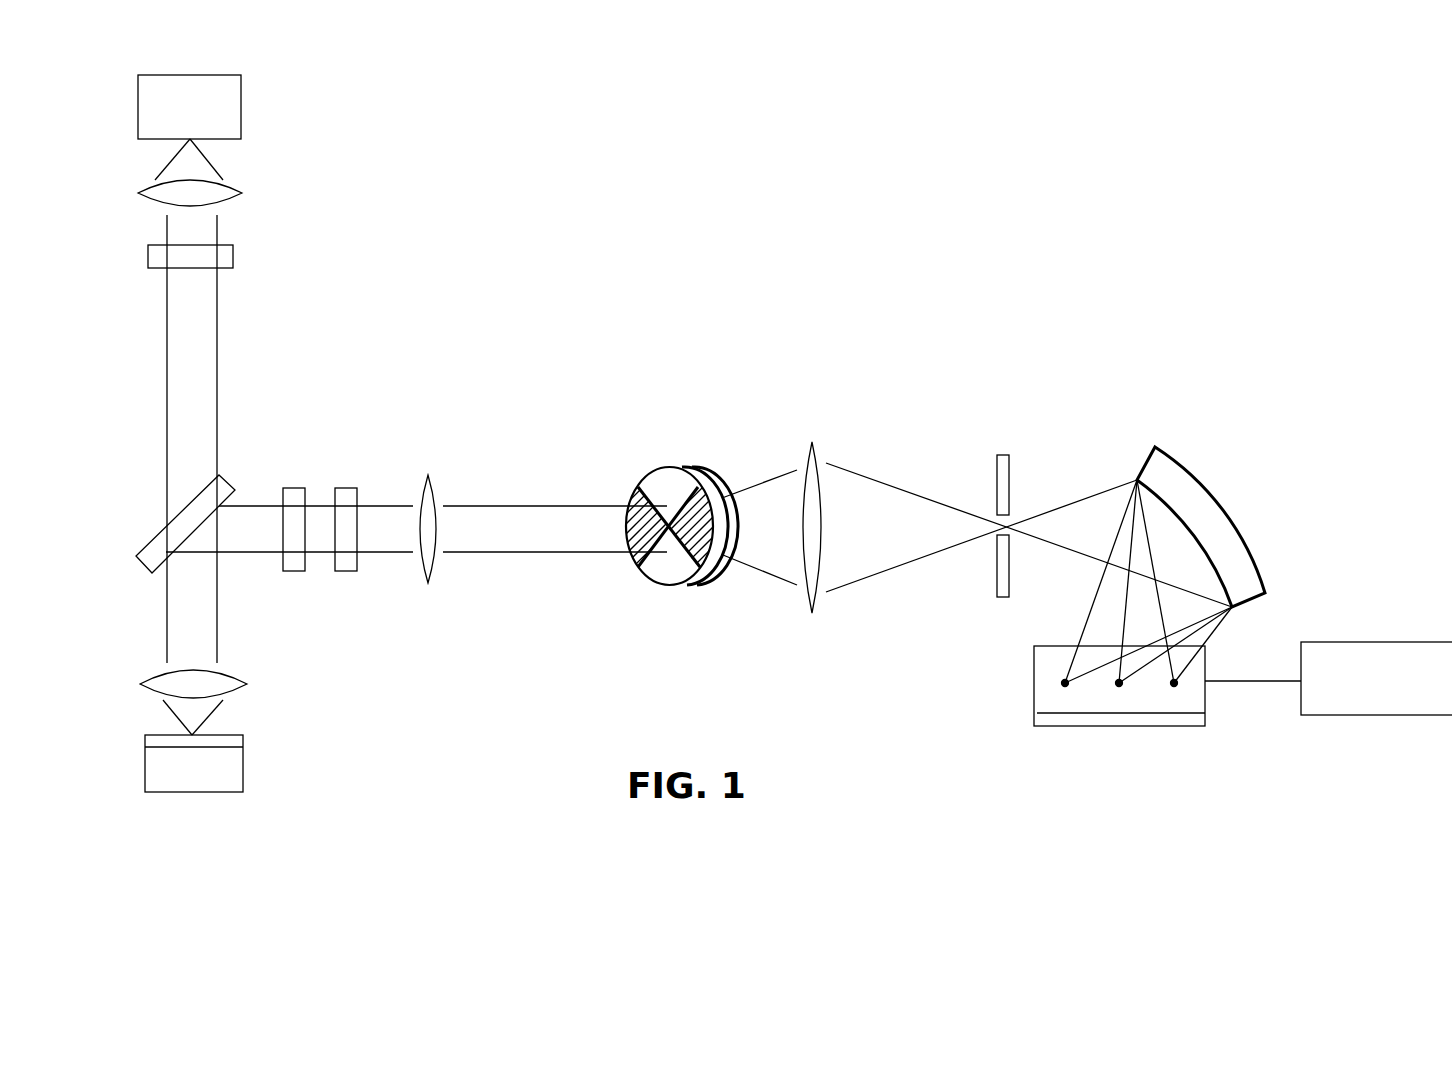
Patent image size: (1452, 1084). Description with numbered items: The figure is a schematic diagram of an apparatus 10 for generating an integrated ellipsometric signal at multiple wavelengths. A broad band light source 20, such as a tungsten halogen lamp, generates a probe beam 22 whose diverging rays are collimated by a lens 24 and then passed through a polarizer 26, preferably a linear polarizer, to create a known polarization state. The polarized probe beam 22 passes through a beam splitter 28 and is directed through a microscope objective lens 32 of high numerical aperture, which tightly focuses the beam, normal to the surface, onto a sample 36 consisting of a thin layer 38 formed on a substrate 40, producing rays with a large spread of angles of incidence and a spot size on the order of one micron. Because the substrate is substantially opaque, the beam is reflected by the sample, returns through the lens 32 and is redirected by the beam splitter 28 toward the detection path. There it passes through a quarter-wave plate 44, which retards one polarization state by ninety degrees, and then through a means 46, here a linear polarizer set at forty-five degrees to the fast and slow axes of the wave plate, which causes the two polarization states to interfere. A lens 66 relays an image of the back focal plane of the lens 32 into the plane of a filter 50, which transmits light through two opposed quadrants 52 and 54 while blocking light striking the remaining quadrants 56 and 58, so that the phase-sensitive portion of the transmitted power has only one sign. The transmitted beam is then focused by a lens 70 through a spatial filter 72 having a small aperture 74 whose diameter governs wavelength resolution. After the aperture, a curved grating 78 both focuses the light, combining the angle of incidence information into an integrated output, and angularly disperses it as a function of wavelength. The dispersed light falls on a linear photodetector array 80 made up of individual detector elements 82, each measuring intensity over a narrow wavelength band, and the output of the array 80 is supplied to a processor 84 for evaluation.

The apparatus 10 is at (562, 364).
The broad band light source 20 is at (242, 108).
The probe beam 22 is at (208, 160).
The lens 24 is at (232, 200).
The polarizer 26 is at (232, 250).
The beam splitter 28 is at (222, 477).
The microscope objective lens 32 is at (230, 670).
The sample 36 is at (258, 765).
The thin layer 38 is at (240, 742).
The substrate 40 is at (240, 780).
The quarter-wave plate 44 is at (298, 488).
The means for causing polarization states to interfere 46 is at (350, 488).
The filter 50 is at (647, 470).
The quadrant 52 is at (670, 478).
The quadrant 54 is at (670, 572).
The quadrant 56 is at (705, 548).
The quadrant 58 is at (640, 548).
The lens 66 is at (437, 482).
The lens 70 is at (820, 455).
The spatial filter 72 is at (1010, 483).
The aperture 74 is at (992, 533).
The curved grating 78 is at (1200, 482).
The linear photodetector array 80 is at (1200, 700).
The detector elements 82 is at (1119, 686).
The processor 84 is at (1361, 643).